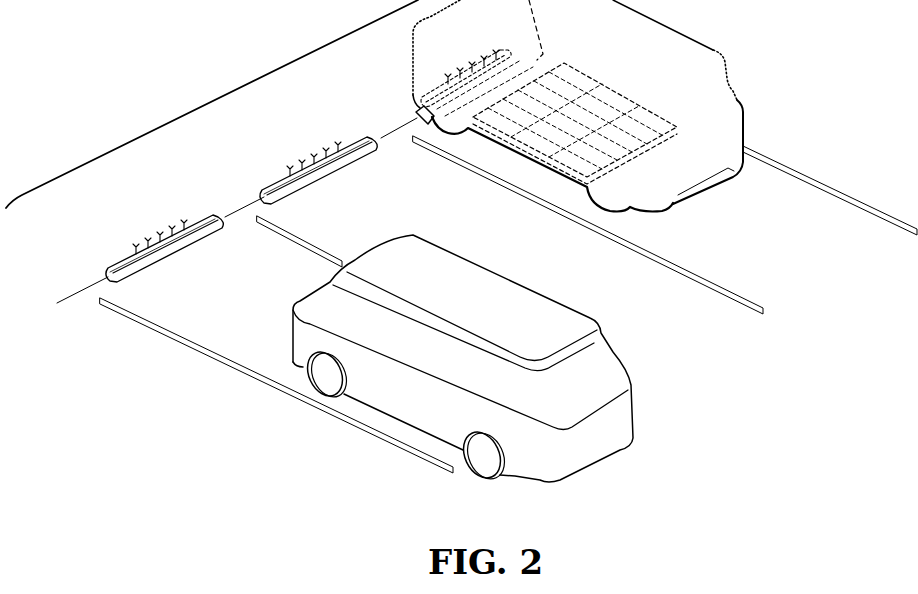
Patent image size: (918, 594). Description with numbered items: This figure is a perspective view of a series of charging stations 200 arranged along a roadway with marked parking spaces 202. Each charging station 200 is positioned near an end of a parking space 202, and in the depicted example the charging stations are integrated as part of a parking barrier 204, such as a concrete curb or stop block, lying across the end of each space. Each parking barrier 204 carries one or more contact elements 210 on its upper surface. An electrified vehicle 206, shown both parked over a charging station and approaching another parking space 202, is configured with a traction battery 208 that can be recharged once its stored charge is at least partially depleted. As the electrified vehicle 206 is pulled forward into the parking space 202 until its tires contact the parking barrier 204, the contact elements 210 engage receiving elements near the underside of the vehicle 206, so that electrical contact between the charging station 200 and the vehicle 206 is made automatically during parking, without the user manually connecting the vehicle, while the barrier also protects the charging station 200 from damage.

The charging station 200 is at (257, 78).
The parking space 202 is at (248, 296).
The parking barrier 204 is at (213, 217).
The electrified vehicle 206 is at (731, 80).
The traction battery 208 is at (610, 83).
The contact element 210 is at (157, 233).